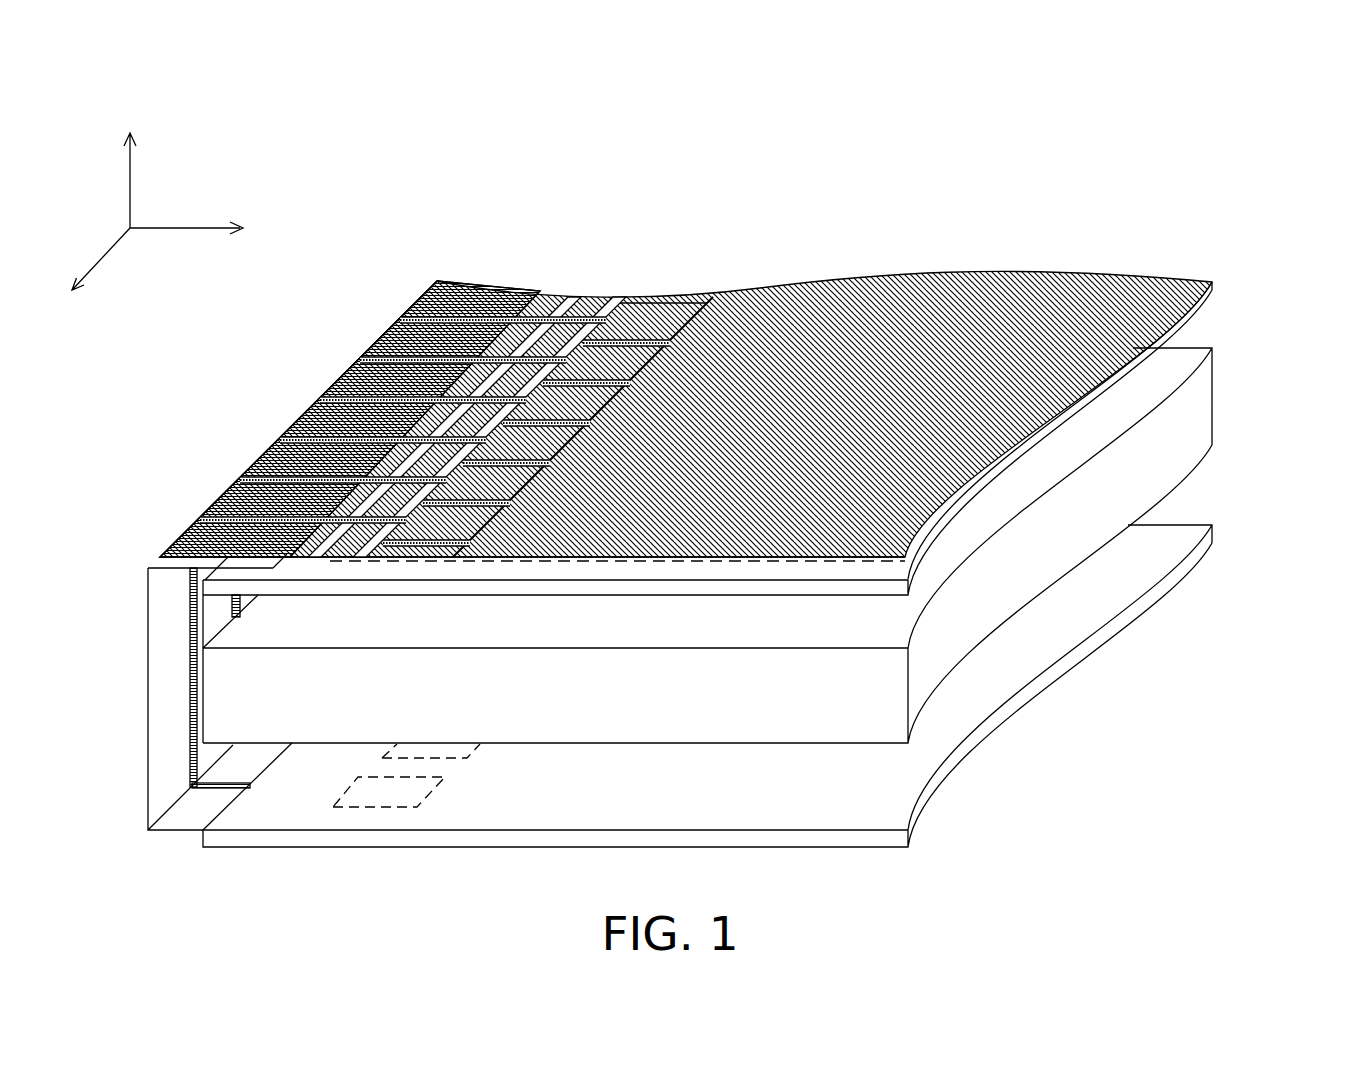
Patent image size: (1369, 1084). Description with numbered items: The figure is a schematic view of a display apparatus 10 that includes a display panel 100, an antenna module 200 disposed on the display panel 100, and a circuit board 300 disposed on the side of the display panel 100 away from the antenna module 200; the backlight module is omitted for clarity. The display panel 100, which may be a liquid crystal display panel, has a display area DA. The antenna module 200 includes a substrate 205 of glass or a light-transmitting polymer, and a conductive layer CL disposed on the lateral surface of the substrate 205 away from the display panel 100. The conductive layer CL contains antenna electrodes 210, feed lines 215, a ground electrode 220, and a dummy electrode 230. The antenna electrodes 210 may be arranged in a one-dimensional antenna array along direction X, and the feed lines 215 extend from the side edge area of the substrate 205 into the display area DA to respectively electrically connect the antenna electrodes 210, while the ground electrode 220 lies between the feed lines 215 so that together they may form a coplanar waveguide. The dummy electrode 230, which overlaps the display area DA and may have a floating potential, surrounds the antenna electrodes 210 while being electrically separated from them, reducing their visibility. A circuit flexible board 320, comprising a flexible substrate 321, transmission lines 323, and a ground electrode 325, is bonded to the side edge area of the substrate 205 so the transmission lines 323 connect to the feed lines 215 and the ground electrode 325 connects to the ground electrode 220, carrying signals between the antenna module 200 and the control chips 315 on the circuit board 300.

The display apparatus 10 is at (701, 488).
The display panel 100 is at (1200, 413).
The antenna module 200 is at (761, 396).
The substrate 205 is at (1213, 290).
The conductive layer CL is at (761, 317).
The antenna electrode 210 is at (640, 303).
The feed line 215 is at (550, 327).
The ground electrode 220 is at (500, 310).
The dummy electrode 230 is at (858, 300).
The circuit board 300 is at (384, 838).
The control chip 315 is at (477, 750).
The circuit flexible board 320 is at (293, 555).
The flexible substrate 321 is at (148, 568).
The transmission line 323 is at (275, 462).
The ground electrode 325 is at (305, 418).
The display area DA is at (598, 565).